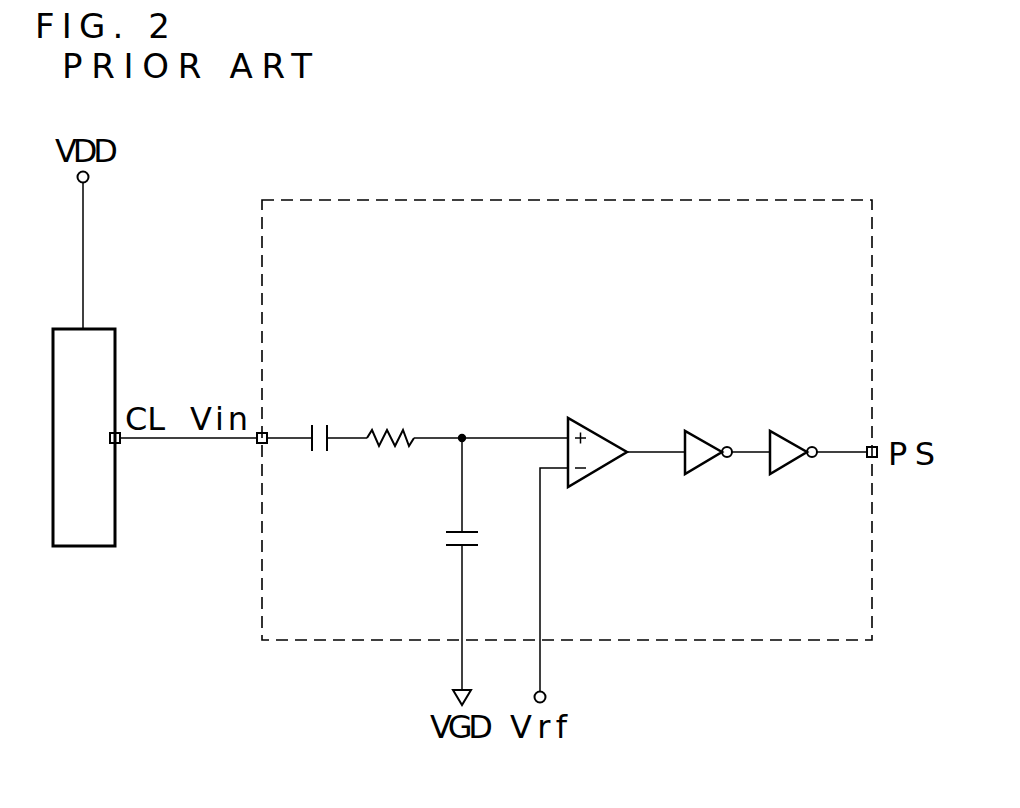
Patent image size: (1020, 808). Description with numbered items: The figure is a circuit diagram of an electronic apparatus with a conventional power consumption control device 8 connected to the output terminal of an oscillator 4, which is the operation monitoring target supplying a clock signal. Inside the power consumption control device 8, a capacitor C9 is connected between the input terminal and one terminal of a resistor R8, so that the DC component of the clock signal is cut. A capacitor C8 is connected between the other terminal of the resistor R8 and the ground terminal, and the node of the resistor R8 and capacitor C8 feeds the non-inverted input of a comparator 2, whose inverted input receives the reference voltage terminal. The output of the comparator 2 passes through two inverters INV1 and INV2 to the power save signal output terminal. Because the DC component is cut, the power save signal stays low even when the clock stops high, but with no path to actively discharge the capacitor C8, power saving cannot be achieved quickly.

The comparator 2 is at (600, 428).
The oscillator 4 is at (68, 328).
The power consumption control device 8 is at (700, 200).
The resistor R8 is at (396, 428).
The capacitor C8 is at (442, 540).
The capacitor C9 is at (318, 455).
The inverter INV1 is at (705, 432).
The inverter INV2 is at (790, 430).